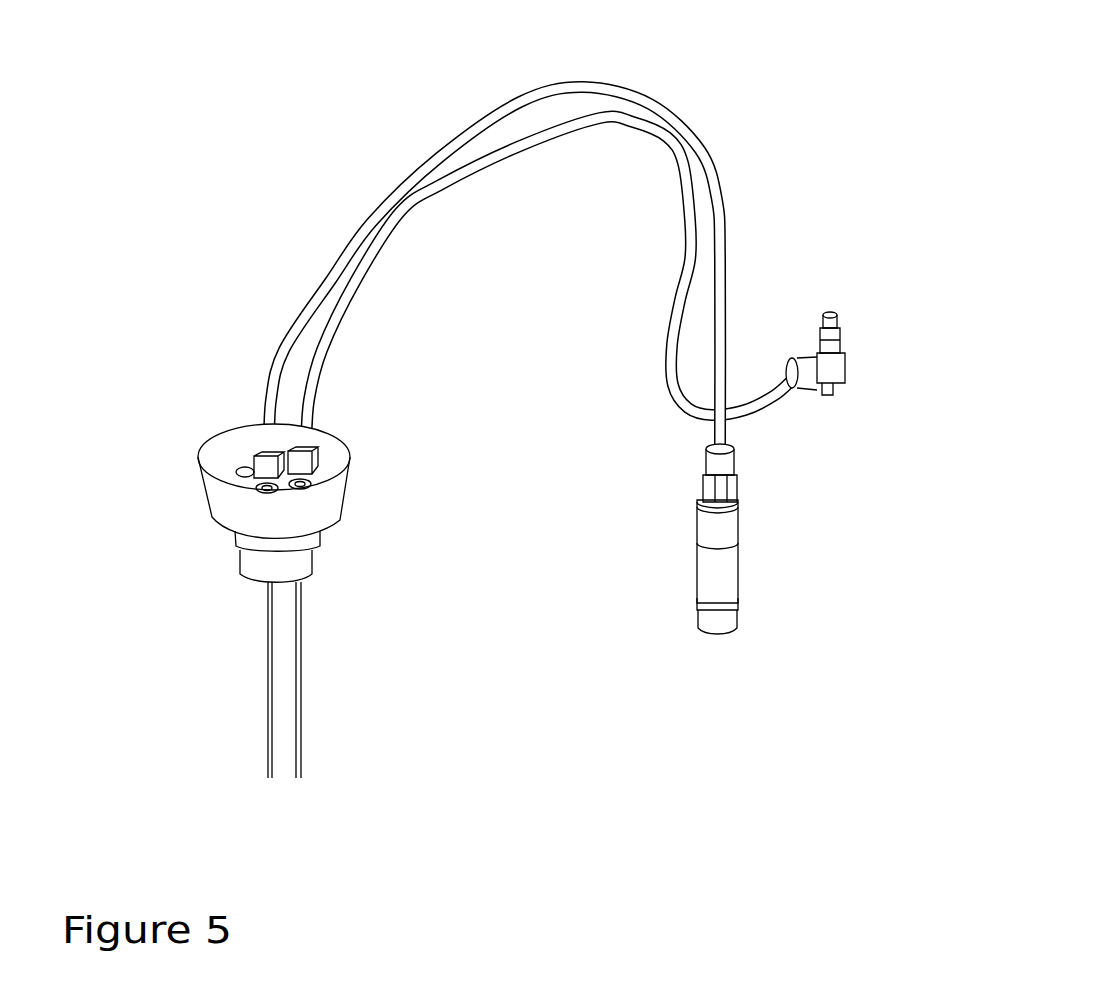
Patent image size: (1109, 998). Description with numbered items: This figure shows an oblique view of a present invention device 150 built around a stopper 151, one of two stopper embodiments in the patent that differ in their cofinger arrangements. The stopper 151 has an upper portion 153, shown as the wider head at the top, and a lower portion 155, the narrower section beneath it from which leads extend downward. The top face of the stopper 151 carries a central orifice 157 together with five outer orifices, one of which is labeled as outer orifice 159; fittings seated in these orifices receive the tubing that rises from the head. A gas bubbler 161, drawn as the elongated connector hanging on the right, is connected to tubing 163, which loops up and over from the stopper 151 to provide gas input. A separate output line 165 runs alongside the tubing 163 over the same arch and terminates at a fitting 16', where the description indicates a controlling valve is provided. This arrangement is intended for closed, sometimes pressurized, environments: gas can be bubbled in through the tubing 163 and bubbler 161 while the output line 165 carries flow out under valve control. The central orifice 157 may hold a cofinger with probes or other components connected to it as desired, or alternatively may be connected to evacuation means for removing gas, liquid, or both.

The device 150 is at (308, 585).
The stopper 151 is at (365, 511).
The upper portion 153 is at (381, 564).
The lower cylinder / lead housing 155 is at (382, 664).
The central orifice 157 is at (377, 441).
The outer orifice 159 is at (178, 443).
The gas bubbler 161 is at (809, 539).
The tubing 163 is at (549, 282).
The output line 165 is at (533, 230).
The fitting 16' is at (887, 328).